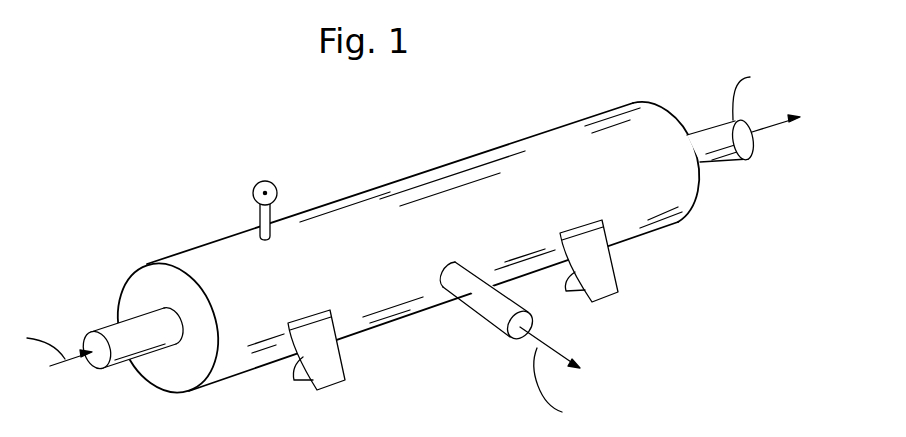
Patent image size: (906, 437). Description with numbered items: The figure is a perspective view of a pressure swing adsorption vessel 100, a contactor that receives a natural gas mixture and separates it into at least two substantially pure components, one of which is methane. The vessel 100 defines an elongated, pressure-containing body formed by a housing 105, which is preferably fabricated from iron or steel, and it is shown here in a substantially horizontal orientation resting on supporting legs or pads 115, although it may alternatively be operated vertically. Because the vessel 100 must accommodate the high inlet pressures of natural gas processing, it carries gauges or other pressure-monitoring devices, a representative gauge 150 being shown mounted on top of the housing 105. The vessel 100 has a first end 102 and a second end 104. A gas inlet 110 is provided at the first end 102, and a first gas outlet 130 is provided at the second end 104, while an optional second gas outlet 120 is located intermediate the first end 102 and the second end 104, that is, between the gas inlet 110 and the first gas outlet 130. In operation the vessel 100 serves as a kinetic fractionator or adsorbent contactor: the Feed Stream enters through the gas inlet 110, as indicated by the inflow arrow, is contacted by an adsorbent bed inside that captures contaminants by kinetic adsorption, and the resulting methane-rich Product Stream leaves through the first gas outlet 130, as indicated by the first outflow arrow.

The pressure swing adsorption vessel 100 is at (163, 152).
The first end 102 is at (152, 288).
The second end 104 is at (700, 183).
The housing 105 is at (530, 162).
The gas inlet 110 is at (113, 333).
The supporting legs or pads 115 is at (328, 377).
The second gas outlet 120 is at (468, 287).
The first gas outlet 130 is at (702, 132).
The gauge 150 is at (267, 182).